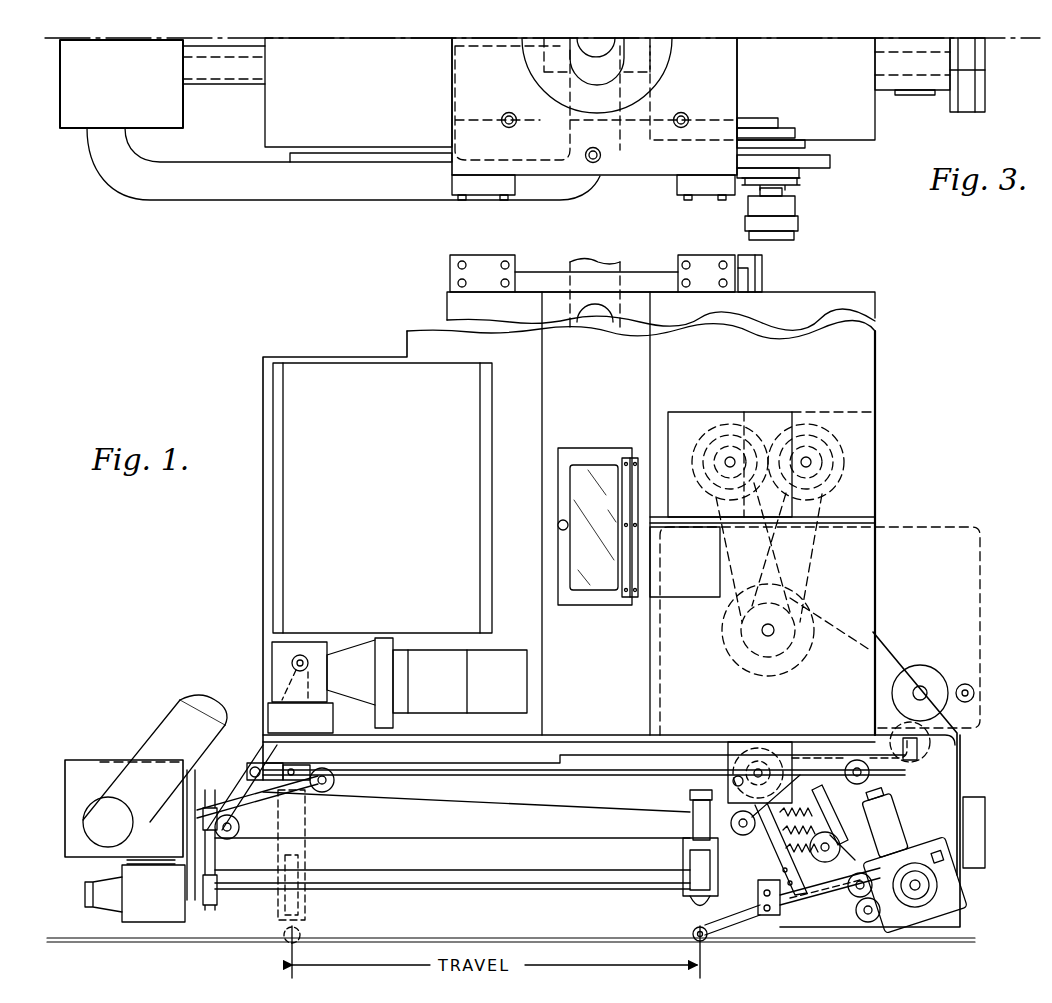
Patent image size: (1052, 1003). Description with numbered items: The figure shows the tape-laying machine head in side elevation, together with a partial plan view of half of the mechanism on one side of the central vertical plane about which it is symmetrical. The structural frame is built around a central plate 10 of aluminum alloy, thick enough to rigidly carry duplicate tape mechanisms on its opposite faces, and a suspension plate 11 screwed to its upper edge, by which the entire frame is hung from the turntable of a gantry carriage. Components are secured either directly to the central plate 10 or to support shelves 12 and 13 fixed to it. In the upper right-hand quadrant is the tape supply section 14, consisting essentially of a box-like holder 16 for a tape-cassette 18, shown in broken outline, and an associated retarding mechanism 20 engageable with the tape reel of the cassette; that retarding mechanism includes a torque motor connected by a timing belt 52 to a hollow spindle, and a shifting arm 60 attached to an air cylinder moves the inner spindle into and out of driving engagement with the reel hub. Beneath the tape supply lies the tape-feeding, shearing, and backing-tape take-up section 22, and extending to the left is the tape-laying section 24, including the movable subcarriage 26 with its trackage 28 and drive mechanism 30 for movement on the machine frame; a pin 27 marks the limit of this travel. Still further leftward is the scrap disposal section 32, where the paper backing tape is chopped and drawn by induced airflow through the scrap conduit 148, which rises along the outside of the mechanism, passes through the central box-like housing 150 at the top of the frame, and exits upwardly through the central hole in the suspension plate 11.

In FIG. 1, the central plate 10 is at (793, 298).
In FIG. 3, the suspension plate 11 is at (498, 100).
In FIG. 1, the suspension plate 11 is at (536, 282).
In FIG. 1, the support shelf 12 is at (842, 522).
In FIG. 1, the support shelf 13 is at (530, 740).
In FIG. 1, the tape supply section 14 is at (882, 510).
In FIG. 1, the box-like holder 16 is at (868, 576).
In FIG. 1, the tape-cassette 18 is at (950, 533).
In FIG. 3, the retarding mechanism 20 is at (812, 178).
In FIG. 1, the retarding mechanism 20 is at (838, 438).
In FIG. 1, the tape-feeding, shearing, and backing-tape take-up section 22 is at (965, 788).
In FIG. 1, the tape-laying section 24 is at (578, 895).
In FIG. 1, the movable subcarriage 26 is at (683, 855).
In FIG. 1, the travel stop pin 27 is at (304, 930).
In FIG. 1, the trackage 28 is at (480, 872).
In FIG. 1, the drive mechanism 30 is at (258, 683).
In FIG. 3, the scrap disposal section 32 is at (128, 102).
In FIG. 1, the scrap disposal section 32 is at (112, 755).
In FIG. 3, the timing belt 52 is at (818, 158).
In FIG. 3, the shifting arm 60 is at (798, 226).
In FIG. 3, the scrap conduit 148 is at (270, 188).
In FIG. 1, the scrap conduit 148 is at (622, 270).
In FIG. 1, the central box-like housing 150 is at (612, 389).